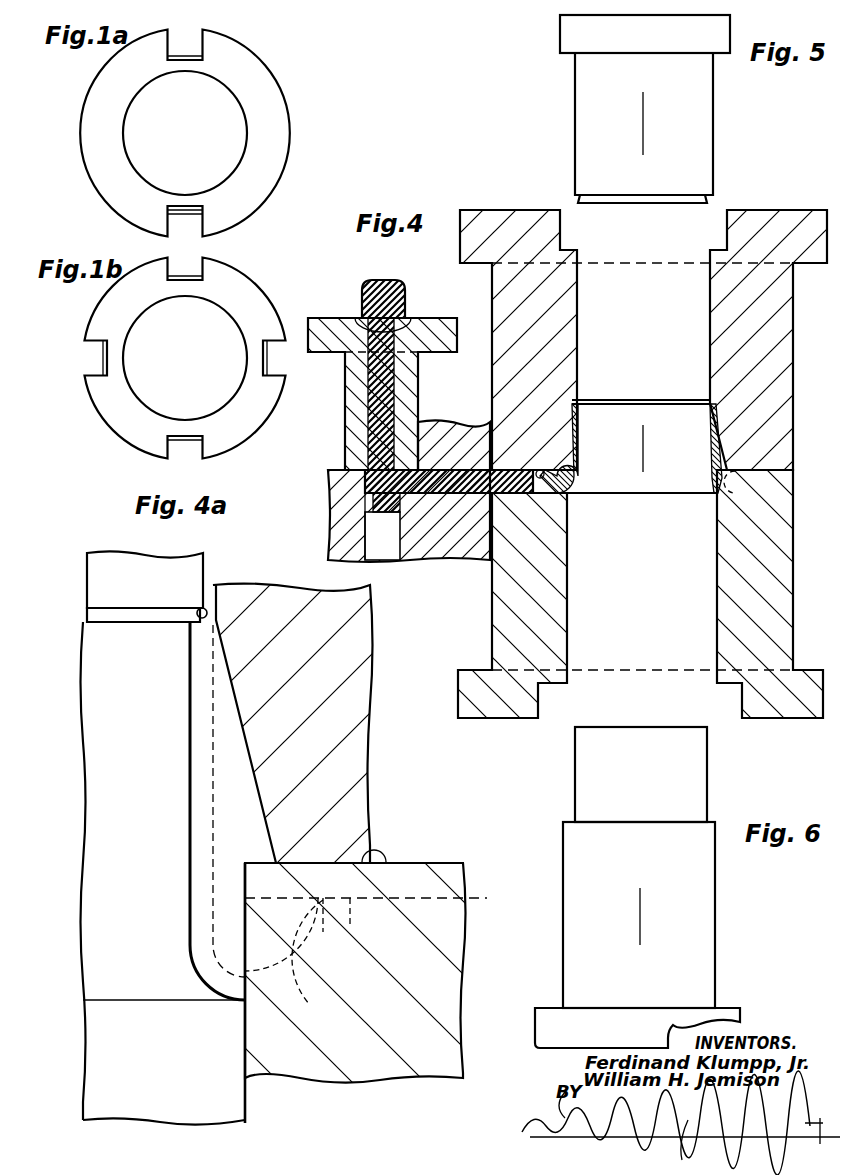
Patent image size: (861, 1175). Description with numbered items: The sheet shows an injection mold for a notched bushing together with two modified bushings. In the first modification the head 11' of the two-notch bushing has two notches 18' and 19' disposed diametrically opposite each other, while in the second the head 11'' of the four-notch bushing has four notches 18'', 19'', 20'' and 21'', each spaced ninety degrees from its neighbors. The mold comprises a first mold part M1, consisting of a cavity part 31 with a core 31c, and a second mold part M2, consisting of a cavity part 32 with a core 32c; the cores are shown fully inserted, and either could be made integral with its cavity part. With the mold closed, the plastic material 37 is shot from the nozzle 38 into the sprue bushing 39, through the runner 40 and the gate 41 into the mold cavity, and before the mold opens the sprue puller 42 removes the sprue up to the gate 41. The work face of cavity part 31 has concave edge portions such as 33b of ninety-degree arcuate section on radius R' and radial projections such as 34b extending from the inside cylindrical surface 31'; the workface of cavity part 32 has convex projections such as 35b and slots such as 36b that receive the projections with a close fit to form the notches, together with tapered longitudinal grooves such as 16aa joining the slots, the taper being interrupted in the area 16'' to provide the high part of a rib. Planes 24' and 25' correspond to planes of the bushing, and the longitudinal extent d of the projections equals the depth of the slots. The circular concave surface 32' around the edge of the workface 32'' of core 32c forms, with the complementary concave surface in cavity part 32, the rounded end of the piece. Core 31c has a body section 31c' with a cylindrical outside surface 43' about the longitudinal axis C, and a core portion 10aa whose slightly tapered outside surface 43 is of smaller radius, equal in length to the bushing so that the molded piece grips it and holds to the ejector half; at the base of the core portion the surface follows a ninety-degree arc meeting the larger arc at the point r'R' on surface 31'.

In FIG. 1A, the notch 18' is at (185, 121).
In FIG. 1A, the head 11' is at (189, 133).
In FIG. 1A, the notch 19' is at (156, 232).
In FIG. 1B, the notch 18'' is at (185, 349).
In FIG. 1B, the head 11'' is at (189, 358).
In FIG. 1B, the notch 19'' is at (308, 388).
In FIG. 1B, the notch 20'' is at (140, 465).
In FIG. 1B, the notch 21'' is at (66, 389).
In FIG. 4, the nozzle 38 is at (405, 294).
In FIG. 4, the sprue bushing 39 is at (418, 381).
In FIG. 4, the plastic material 37 is at (367, 446).
In FIG. 4, the runner 40 is at (440, 520).
In FIG. 4, the sprue puller 42 is at (386, 554).
In FIG. 5, the gate 41 is at (558, 492).
In FIG. 5, the cavity part 32 is at (643, 340).
In FIG. 4A, the cavity part 32 is at (316, 723).
In FIG. 5, the core 32c is at (574, 114).
In FIG. 4A, the core 32c is at (104, 555).
In FIG. 5, the concave surface 32' is at (616, 192).
In FIG. 4A, the concave surface 32' is at (229, 586).
In FIG. 5, the workface 32'' is at (740, 185).
In FIG. 4A, the workface 32'' is at (122, 624).
In FIG. 5, the second mold part M2 is at (795, 365).
In FIG. 5, the first mold part M1 is at (795, 523).
In FIG. 5, the cavity part 31 is at (643, 594).
In FIG. 4A, the cavity part 31 is at (376, 993).
In FIG. 5, the core 31c is at (768, 726).
In FIG. 4A, the core 31c is at (164, 1136).
In FIG. 6, the core 31c is at (660, 963).
In FIG. 4A, the body section 31c' is at (66, 1063).
In FIG. 6, the body section 31c' is at (611, 915).
In FIG. 5, the core portion 10aa is at (622, 426).
In FIG. 4A, the core portion 10aa is at (102, 852).
In FIG. 6, the core portion 10aa is at (557, 727).
In FIG. 5, the longitudinal axis C is at (646, 116).
In FIG. 6, the longitudinal axis C is at (638, 907).
In FIG. 4A, the workface 43 is at (184, 811).
In FIG. 6, the workface 43 is at (743, 757).
In FIG. 4A, the outside surface 43' is at (293, 1106).
In FIG. 6, the outside surface 43' is at (753, 951).
In FIG. 4A, the groove 16aa is at (245, 758).
In FIG. 4A, the area 16'' is at (305, 843).
In FIG. 4A, the slot 36b is at (398, 857).
In FIG. 4A, the projection 34b is at (395, 862).
In FIG. 4A, the plane 25' is at (492, 865).
In FIG. 4A, the plane 24' is at (383, 897).
In FIG. 4A, the longitudinal extent d is at (240, 864).
In FIG. 4A, the inside cylindrical surface 31' is at (265, 935).
In FIG. 4A, the projection 35b is at (297, 942).
In FIG. 4A, the concave edge portion 33b is at (301, 998).
In FIG. 4A, the junction point r'R' is at (277, 1009).